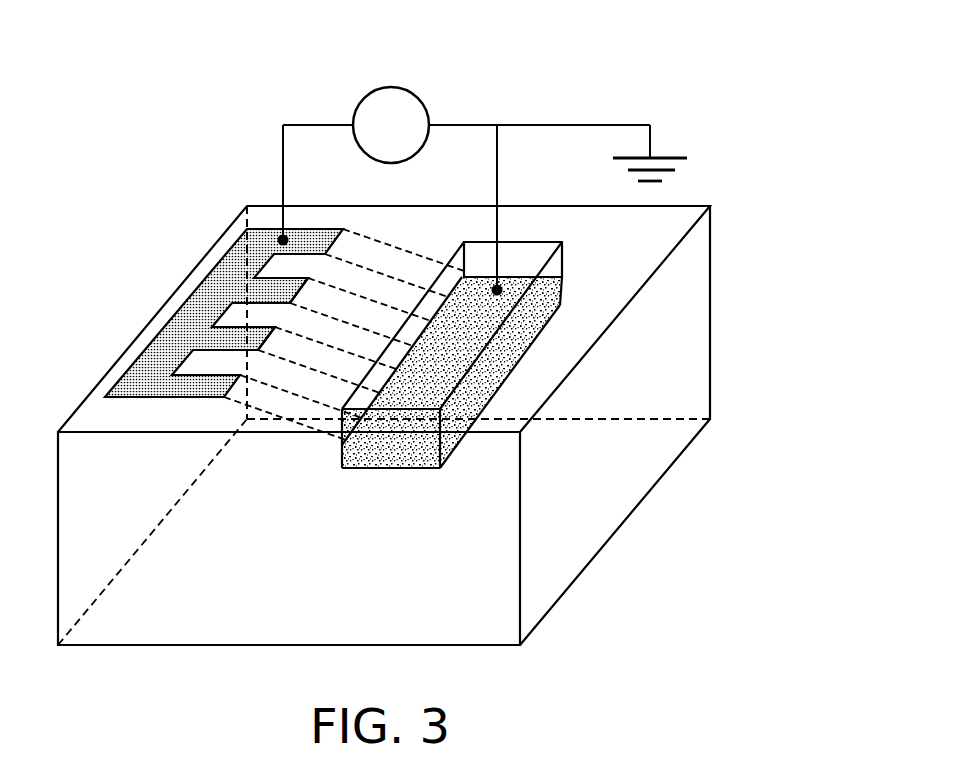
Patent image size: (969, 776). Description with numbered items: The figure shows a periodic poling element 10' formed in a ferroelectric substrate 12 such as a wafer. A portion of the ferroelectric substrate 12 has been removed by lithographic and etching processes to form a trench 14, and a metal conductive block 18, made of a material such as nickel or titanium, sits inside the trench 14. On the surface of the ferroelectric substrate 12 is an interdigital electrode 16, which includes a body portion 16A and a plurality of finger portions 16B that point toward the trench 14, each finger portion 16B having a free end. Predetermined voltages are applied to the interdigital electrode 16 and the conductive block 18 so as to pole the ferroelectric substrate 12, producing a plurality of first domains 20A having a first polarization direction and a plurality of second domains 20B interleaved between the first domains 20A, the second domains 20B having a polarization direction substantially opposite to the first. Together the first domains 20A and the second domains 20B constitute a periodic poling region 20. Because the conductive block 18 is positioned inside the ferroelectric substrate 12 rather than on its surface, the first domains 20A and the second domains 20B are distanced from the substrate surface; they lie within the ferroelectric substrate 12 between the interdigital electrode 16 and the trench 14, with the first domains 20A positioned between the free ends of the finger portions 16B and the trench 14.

The periodic poling element 10' is at (407, 350).
The ferroelectric substrate 12 is at (250, 589).
The trench 14 is at (560, 254).
The interdigital electrode 16 is at (224, 276).
The body portion 16A is at (188, 322).
The finger portions 16B is at (262, 293).
The conductive block 18 is at (393, 455).
The periodic poling region 20 is at (366, 221).
The first domains 20A is at (363, 255).
The second domains 20B is at (393, 297).